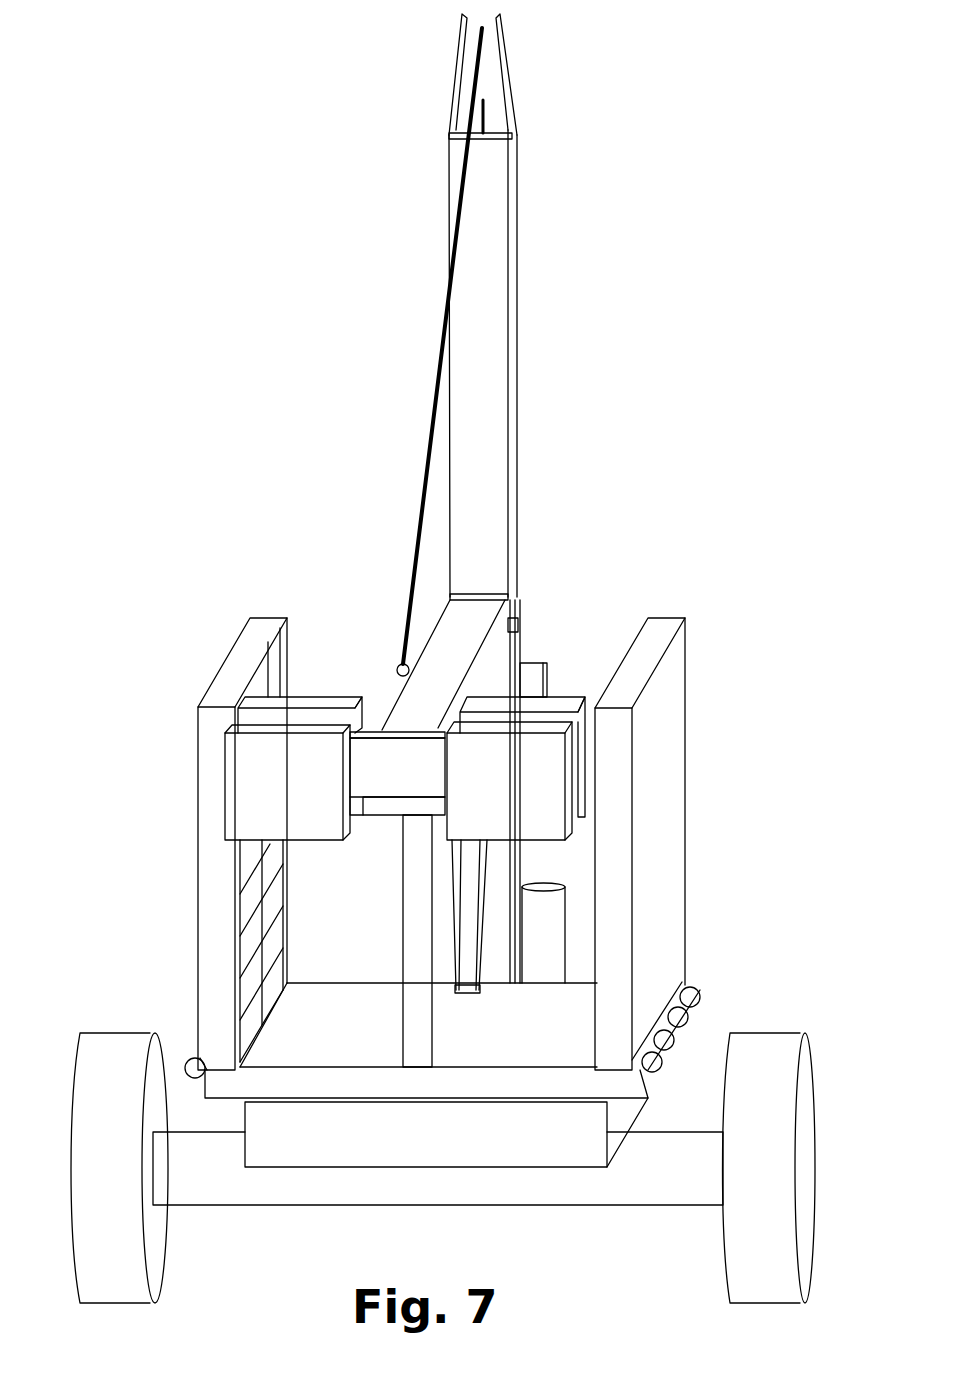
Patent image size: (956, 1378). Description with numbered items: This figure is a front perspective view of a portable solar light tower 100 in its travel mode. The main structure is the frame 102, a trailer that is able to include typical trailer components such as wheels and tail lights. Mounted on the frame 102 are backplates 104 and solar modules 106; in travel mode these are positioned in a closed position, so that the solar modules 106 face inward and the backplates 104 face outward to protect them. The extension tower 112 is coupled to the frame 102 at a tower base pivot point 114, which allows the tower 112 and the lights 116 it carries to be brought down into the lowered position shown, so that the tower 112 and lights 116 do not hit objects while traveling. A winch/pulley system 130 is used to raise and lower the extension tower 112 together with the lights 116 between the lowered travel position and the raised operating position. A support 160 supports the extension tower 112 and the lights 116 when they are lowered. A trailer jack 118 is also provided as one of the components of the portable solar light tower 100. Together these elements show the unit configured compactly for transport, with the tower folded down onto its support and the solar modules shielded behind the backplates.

The portable solar light tower 100 is at (85, 118).
The frame 102 is at (383, 1028).
The backplates 104 is at (676, 726).
The solar modules 106 is at (280, 668).
The extension tower 112 is at (392, 702).
The tower base pivot point 114 is at (452, 592).
The lights 116 is at (240, 802).
The trailer jack 118 is at (535, 878).
The winch/pulley system 130 is at (528, 50).
The support 160 is at (414, 890).